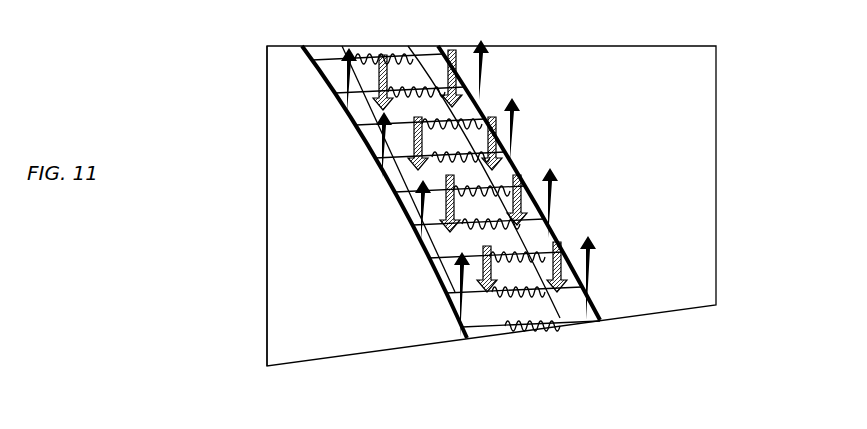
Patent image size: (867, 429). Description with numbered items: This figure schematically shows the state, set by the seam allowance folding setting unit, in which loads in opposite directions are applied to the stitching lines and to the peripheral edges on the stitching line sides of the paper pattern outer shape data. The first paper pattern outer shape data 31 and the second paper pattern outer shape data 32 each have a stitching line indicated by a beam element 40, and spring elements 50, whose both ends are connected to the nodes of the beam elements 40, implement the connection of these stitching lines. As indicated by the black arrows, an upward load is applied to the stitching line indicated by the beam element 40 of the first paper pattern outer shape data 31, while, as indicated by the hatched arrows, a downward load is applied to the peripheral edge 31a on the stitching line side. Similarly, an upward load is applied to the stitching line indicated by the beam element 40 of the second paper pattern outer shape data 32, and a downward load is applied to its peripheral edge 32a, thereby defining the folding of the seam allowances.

The first paper pattern outer shape data 31 is at (290, 210).
The peripheral edge 31a is at (497, 310).
The second paper pattern outer shape data 32 is at (690, 198).
The peripheral edge 32a is at (410, 50).
The beam element 40 is at (457, 290).
The spring element 50 is at (547, 322).